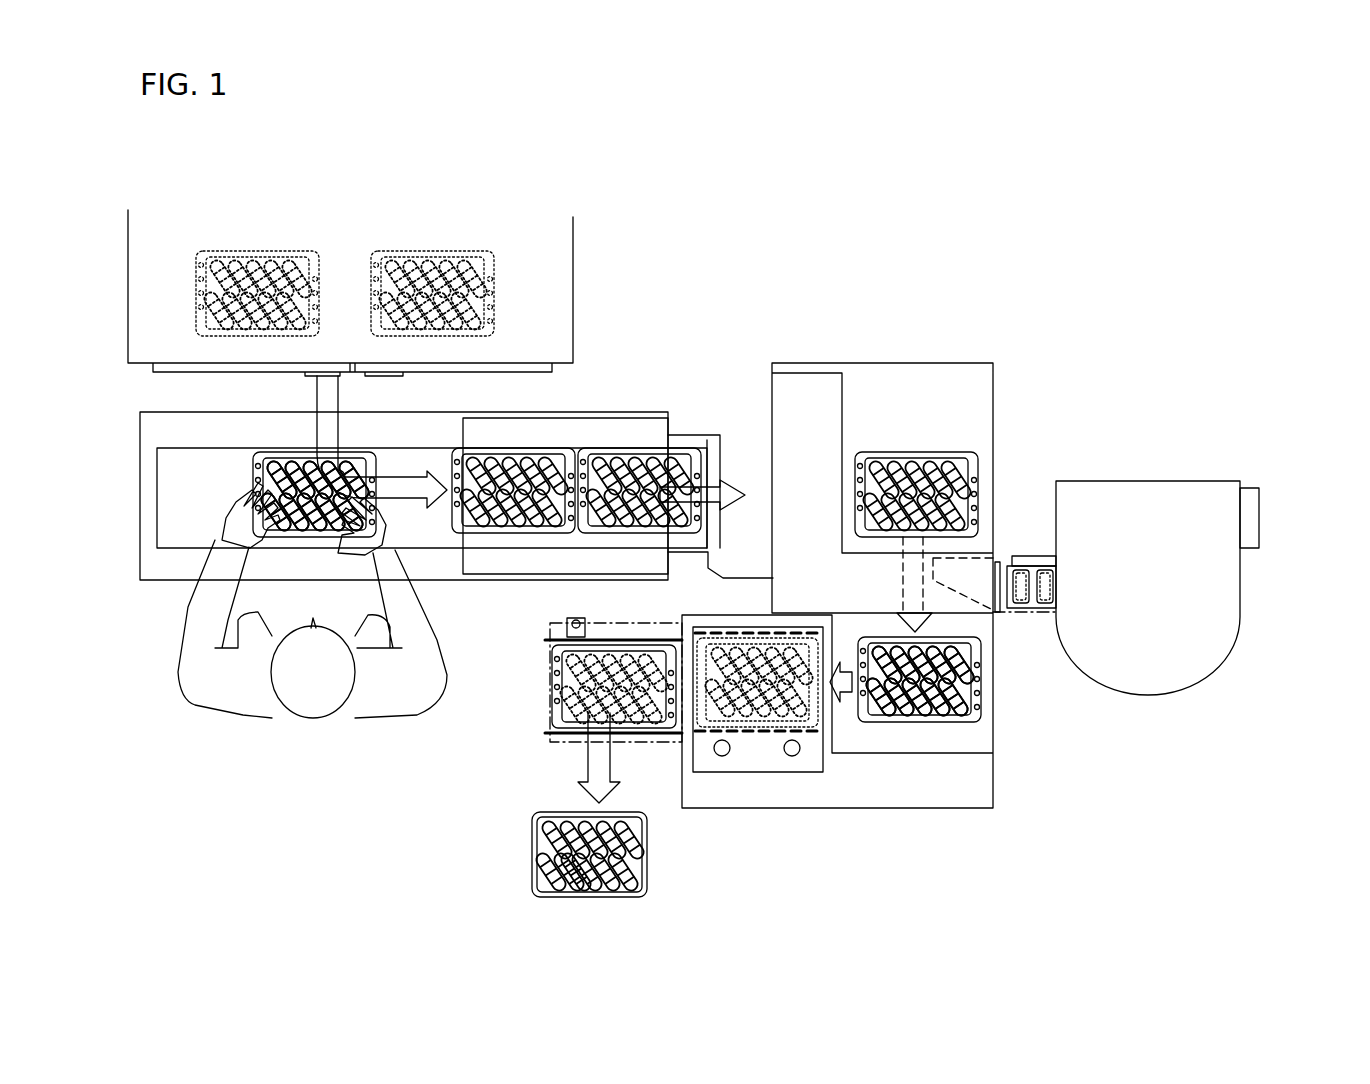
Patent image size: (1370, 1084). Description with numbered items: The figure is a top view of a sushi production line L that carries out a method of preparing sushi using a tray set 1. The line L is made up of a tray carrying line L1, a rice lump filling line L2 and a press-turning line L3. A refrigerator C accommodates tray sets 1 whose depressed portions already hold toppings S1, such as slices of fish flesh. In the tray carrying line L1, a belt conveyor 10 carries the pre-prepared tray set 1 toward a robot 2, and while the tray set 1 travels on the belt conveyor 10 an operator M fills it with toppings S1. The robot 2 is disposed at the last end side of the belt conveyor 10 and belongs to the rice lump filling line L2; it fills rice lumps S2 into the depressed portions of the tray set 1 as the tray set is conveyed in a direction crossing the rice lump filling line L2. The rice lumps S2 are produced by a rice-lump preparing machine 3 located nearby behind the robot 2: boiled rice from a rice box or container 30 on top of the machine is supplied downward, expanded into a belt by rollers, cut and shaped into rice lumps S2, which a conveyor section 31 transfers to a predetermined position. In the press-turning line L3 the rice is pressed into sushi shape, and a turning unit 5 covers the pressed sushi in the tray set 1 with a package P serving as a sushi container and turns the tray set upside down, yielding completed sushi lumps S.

The tray set 1 is at (493, 260).
The toppings S1 is at (473, 250).
The refrigerator C is at (573, 287).
The belt conveyor 10 is at (185, 480).
The sushi production line L is at (676, 386).
The tray carrying line L1 is at (722, 426).
The rice lump filling line L2 is at (1011, 456).
The press-turning line L3 is at (815, 776).
The robot 2 is at (1004, 510).
The rice-lump preparing machine 3 is at (1222, 466).
The rice box or container 30 is at (1218, 640).
The conveyor section 31 is at (1028, 562).
The rice lumps S2 is at (1047, 604).
The turning unit 5 is at (536, 658).
The operator M is at (242, 716).
The package P is at (532, 868).
The completed sushi lumps S is at (553, 886).